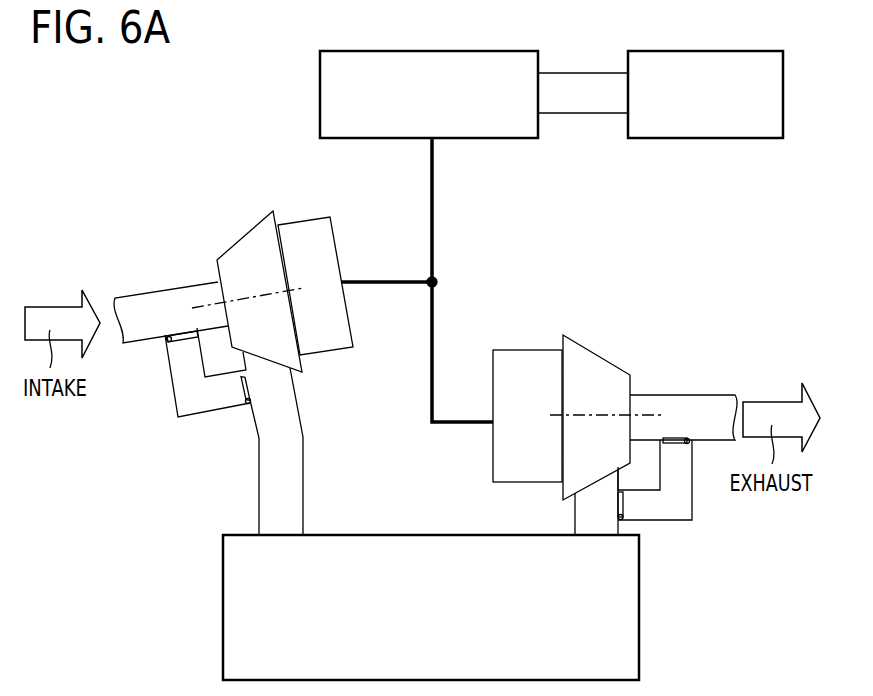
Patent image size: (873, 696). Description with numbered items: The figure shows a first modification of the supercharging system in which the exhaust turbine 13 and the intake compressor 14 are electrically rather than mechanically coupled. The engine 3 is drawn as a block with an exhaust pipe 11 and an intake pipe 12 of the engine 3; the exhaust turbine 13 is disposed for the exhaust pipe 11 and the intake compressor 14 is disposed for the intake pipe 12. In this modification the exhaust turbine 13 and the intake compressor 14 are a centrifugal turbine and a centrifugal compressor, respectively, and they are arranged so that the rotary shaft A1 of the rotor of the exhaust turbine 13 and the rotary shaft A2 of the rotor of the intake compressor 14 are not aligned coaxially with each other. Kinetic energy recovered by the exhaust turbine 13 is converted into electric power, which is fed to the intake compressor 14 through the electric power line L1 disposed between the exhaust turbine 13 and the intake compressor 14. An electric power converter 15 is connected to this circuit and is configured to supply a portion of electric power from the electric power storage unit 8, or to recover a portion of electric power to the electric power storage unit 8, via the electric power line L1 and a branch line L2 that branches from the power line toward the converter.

The engine 3 is at (437, 535).
The electric power storage unit 8 is at (771, 50).
The exhaust pipe 11 is at (705, 395).
The intake pipe 12 is at (133, 293).
The exhaust turbine 13 is at (554, 313).
The intake compressor 14 is at (196, 233).
The electric power converter 15 is at (335, 50).
The rotary shaft A1 is at (608, 413).
The rotary shaft A2 is at (252, 295).
The electric power line L1 is at (427, 358).
The branch line L2 is at (435, 203).